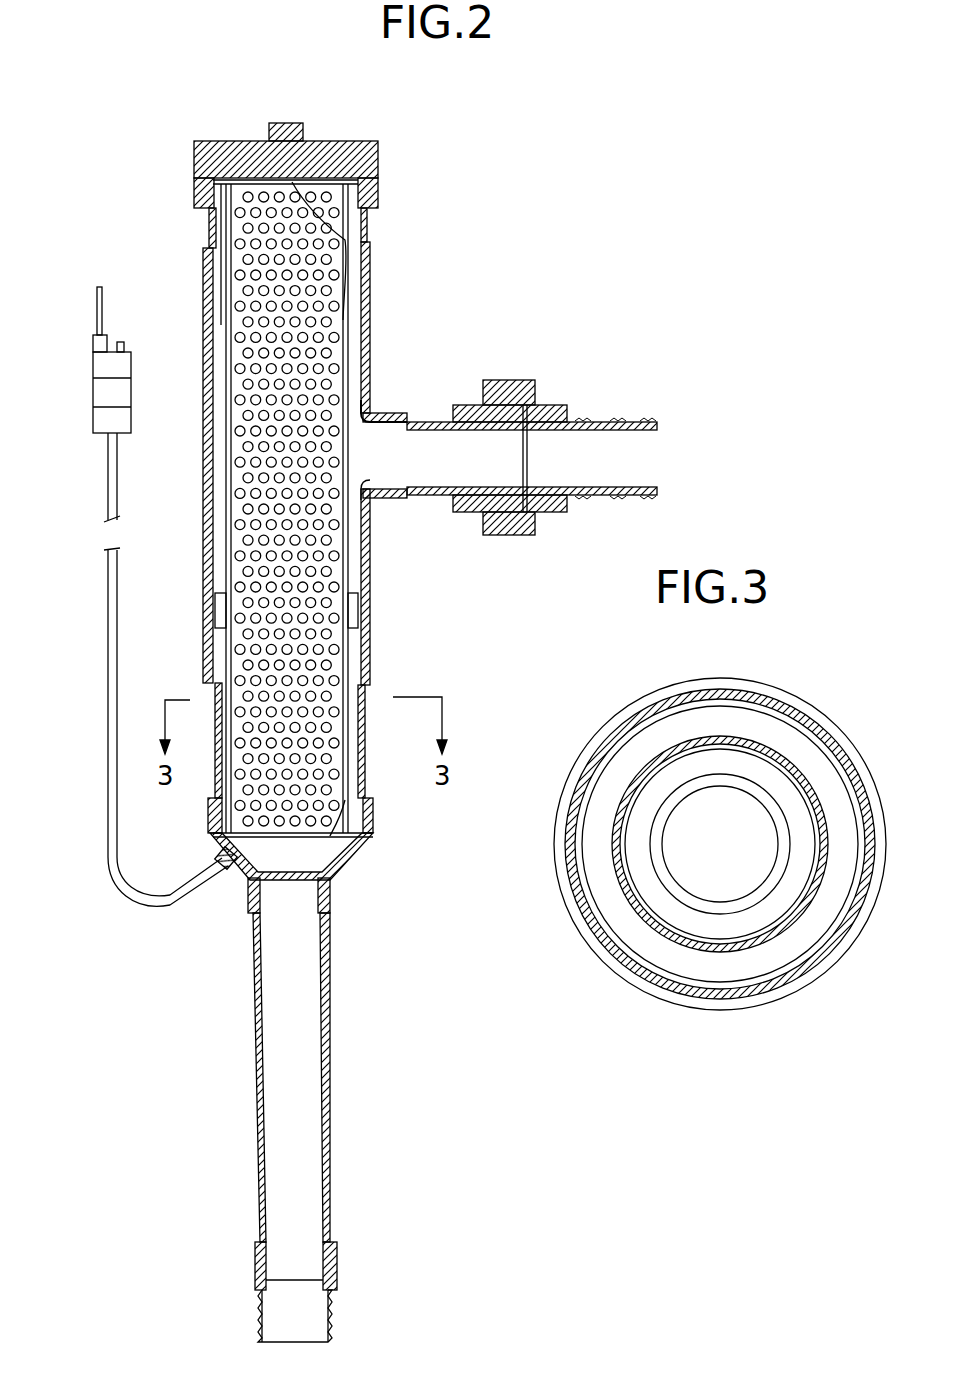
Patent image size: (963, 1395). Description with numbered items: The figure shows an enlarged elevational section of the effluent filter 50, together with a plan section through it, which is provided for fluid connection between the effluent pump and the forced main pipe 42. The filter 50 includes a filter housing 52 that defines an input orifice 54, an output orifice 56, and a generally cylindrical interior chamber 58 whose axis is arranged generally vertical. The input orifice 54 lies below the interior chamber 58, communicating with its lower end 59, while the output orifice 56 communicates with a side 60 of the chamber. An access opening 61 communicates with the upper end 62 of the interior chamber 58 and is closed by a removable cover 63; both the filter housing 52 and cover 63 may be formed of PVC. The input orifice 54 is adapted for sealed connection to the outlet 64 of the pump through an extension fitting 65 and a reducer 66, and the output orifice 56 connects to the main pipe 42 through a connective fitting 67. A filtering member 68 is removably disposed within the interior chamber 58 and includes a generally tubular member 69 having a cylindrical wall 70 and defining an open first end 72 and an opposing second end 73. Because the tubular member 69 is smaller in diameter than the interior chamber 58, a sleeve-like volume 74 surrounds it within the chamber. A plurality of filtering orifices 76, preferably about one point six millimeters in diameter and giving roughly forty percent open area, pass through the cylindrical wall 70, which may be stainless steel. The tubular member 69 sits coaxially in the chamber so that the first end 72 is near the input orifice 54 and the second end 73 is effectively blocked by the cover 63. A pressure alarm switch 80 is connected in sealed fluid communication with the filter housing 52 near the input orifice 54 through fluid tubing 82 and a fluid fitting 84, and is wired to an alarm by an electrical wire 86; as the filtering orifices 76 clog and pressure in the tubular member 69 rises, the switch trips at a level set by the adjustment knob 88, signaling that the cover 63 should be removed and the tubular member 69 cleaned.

In FIG. 2, the main pipe 42 is at (600, 421).
In FIG. 2, the filter 50 is at (483, 318).
In FIG. 2, the filter housing 52 is at (368, 276).
In FIG. 3, the filter housing 52 is at (832, 742).
In FIG. 2, the input orifice 54 is at (342, 855).
In FIG. 2, the output orifice 56 is at (398, 497).
In FIG. 2, the interior chamber 58 is at (370, 528).
In FIG. 2, the lower end 59 is at (214, 812).
In FIG. 2, the side 60 is at (378, 450).
In FIG. 2, the access opening 61 is at (378, 198).
In FIG. 2, the upper end 62 is at (206, 203).
In FIG. 2, the removable cover 63 is at (370, 150).
In FIG. 2, the outlet 64 is at (338, 1307).
In FIG. 2, the extension fitting 65 is at (330, 1058).
In FIG. 3, the extension fitting 65 is at (690, 903).
In FIG. 2, the reducer 66 is at (240, 882).
In FIG. 3, the reducer 66 is at (782, 700).
In FIG. 2, the connective fitting 67 is at (515, 388).
In FIG. 2, the filtering member 68 is at (215, 408).
In FIG. 2, the tubular member 69 is at (355, 605).
In FIG. 2, the cylindrical wall 70 is at (220, 602).
In FIG. 3, the cylindrical wall 70 is at (674, 748).
In FIG. 2, the first end 72 is at (330, 838).
In FIG. 2, the second end 73 is at (294, 184).
In FIG. 2, the sleeve-like volume 74 is at (215, 470).
In FIG. 2, the filtering orifices 76 is at (247, 322).
In FIG. 2, the pressure alarm switch 80 is at (131, 392).
In FIG. 2, the fluid tubing 82 is at (112, 680).
In FIG. 2, the fluid fitting 84 is at (220, 856).
In FIG. 2, the electrical wire 86 is at (100, 285).
In FIG. 2, the adjustment knob 88 is at (125, 345).